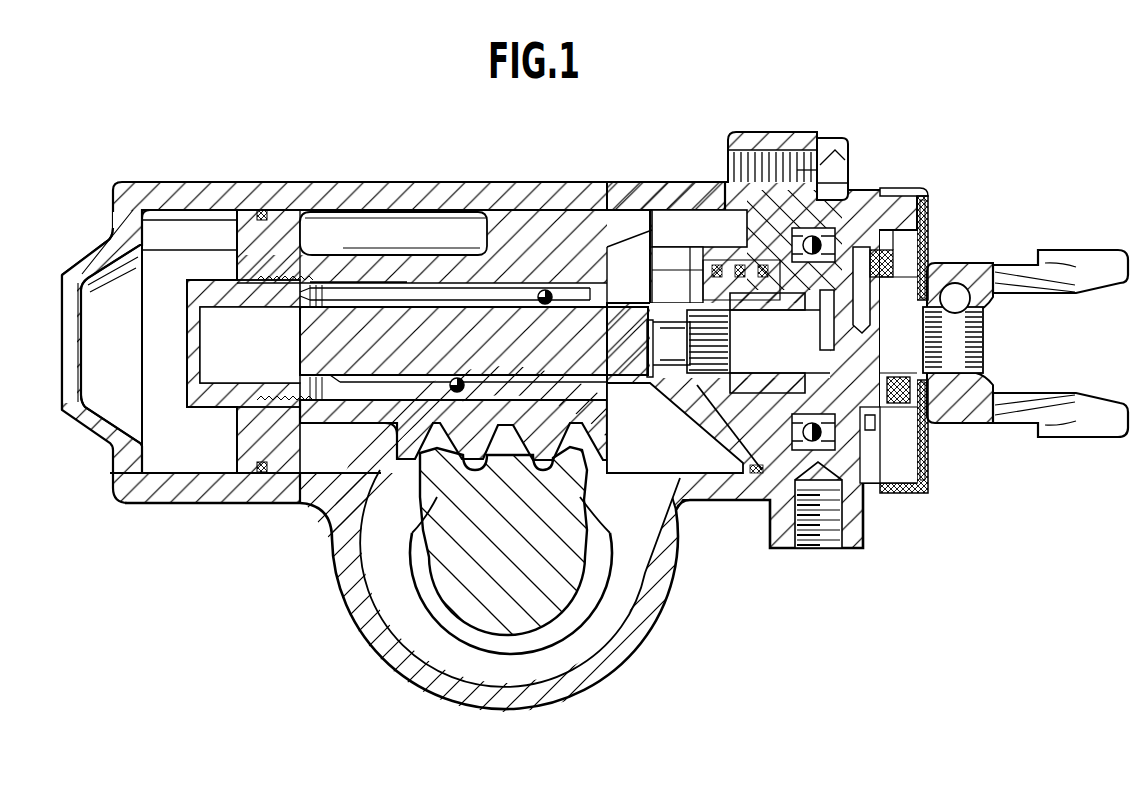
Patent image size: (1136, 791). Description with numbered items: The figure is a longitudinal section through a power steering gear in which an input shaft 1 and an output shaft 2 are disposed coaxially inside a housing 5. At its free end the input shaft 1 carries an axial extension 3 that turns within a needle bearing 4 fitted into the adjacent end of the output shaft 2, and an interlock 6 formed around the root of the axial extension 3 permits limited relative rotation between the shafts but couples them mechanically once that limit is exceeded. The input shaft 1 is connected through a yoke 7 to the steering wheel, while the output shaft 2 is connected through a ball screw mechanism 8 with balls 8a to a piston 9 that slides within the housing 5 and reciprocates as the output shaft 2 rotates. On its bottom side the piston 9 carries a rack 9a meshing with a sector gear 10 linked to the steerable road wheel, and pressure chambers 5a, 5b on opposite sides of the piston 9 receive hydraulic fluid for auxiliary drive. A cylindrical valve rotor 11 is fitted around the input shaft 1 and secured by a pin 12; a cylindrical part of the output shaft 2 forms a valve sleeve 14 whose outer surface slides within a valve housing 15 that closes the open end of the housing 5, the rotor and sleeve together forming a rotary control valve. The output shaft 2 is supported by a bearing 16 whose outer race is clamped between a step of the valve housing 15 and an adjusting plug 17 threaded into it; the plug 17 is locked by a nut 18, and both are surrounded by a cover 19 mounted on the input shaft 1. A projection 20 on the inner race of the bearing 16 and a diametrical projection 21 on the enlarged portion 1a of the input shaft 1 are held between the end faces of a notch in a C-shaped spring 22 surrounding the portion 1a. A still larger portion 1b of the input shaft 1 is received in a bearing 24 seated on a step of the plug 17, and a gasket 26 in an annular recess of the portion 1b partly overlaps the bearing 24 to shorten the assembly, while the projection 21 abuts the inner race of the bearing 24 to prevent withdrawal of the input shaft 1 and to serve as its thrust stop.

The input shaft 1 is at (985, 330).
The portion of increased diameter 1a is at (878, 430).
The portion of still greater diameter 1b is at (925, 415).
The output shaft 2 is at (333, 322).
The axial extension 3 is at (667, 337).
The needle bearing 4 is at (667, 390).
The housing 5 is at (402, 200).
The pressure chamber 5a is at (668, 222).
The pressure chamber 5b is at (195, 228).
The interlock 6 is at (697, 290).
The yoke 7 is at (1102, 262).
The ball screw mechanism 8 is at (503, 283).
The balls 8a is at (546, 289).
The piston 9 is at (282, 458).
The rack 9a is at (395, 442).
The sector gear 10 is at (583, 470).
The valve rotor 11 is at (753, 307).
The pin 12 is at (813, 322).
The valve sleeve 14 is at (690, 287).
The valve housing 15 is at (850, 550).
The bearing 16 is at (838, 206).
The adjusting plug 17 is at (910, 189).
The nut 18 is at (930, 198).
The cover 19 is at (930, 228).
The projection 20 is at (822, 250).
The diametrical projection 21 is at (862, 328).
The C-shaped spring 22 is at (815, 425).
The bearing 24 is at (893, 263).
The gasket 26 is at (912, 395).